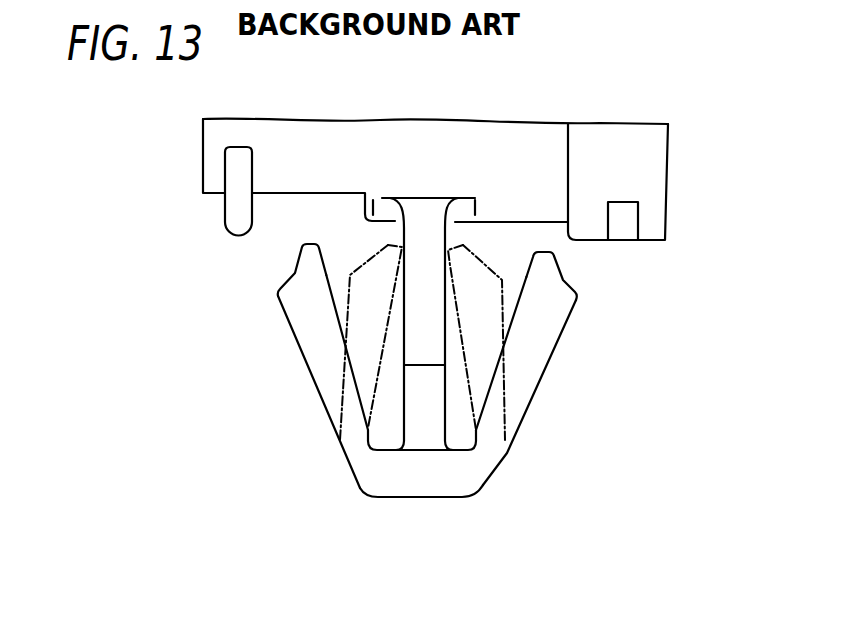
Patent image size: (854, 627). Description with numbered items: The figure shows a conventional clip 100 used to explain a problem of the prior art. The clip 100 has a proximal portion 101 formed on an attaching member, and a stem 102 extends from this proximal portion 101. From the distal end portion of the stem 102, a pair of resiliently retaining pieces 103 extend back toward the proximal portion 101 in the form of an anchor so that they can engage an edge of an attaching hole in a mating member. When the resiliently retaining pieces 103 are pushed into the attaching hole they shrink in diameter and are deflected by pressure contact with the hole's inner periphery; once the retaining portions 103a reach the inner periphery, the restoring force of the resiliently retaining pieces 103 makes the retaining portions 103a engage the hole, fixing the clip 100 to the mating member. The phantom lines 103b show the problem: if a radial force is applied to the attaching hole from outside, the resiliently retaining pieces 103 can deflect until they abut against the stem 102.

The conventional clip 100 is at (528, 477).
The proximal portion 101 is at (443, 180).
The stem 102 is at (418, 428).
The resiliently retaining pieces 103 is at (325, 386).
The retaining portions 103a is at (297, 273).
The phantom lines 103b is at (347, 303).